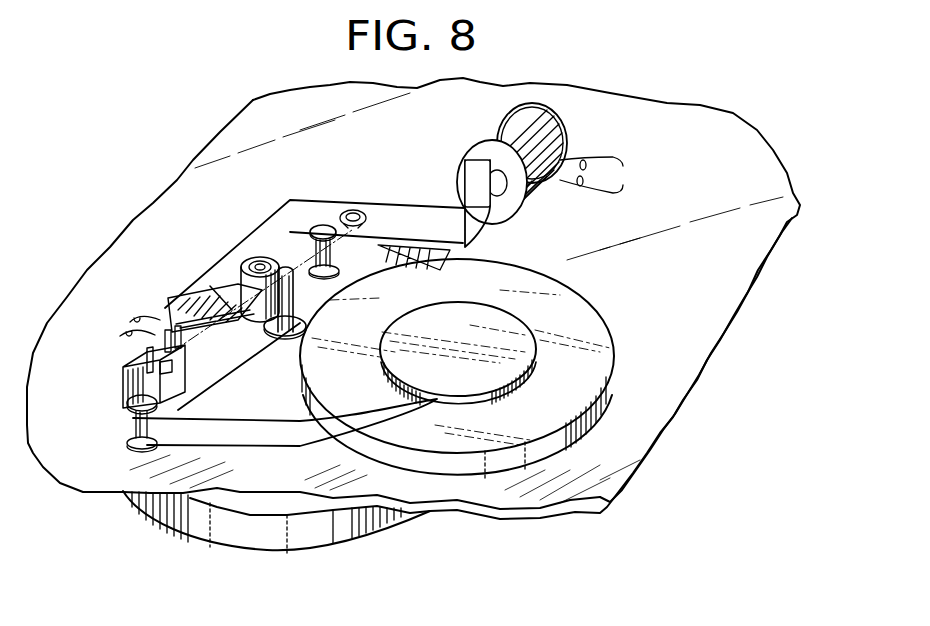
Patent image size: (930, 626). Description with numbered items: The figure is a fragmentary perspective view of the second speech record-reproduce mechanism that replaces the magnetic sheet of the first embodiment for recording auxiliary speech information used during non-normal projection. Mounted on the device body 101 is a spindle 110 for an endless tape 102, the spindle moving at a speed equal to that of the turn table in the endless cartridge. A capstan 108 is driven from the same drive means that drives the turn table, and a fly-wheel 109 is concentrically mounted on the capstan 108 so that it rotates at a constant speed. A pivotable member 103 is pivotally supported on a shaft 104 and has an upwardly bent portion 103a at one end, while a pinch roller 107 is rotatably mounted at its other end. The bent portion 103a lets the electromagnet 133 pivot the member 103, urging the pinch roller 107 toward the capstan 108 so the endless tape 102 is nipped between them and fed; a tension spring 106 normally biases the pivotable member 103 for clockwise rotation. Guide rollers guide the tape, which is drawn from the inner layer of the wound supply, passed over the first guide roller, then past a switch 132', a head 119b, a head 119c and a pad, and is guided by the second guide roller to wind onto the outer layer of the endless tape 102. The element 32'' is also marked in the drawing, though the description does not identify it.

The device body 101 is at (630, 473).
The endless tape 102 is at (257, 435).
The pivotable member 103 is at (418, 210).
The upwardly bent portion 103a is at (487, 177).
The shaft 104 is at (357, 210).
The tension spring 106 is at (349, 158).
The pinch roller 107 is at (247, 287).
The capstan 108 is at (290, 330).
The fly-wheel 109 is at (353, 527).
The spindle 110 is at (487, 315).
The head 119b is at (125, 378).
The head 119c is at (193, 320).
The switch 132' is at (127, 345).
The electromagnet 133 is at (533, 133).
The arm 32'' is at (285, 415).